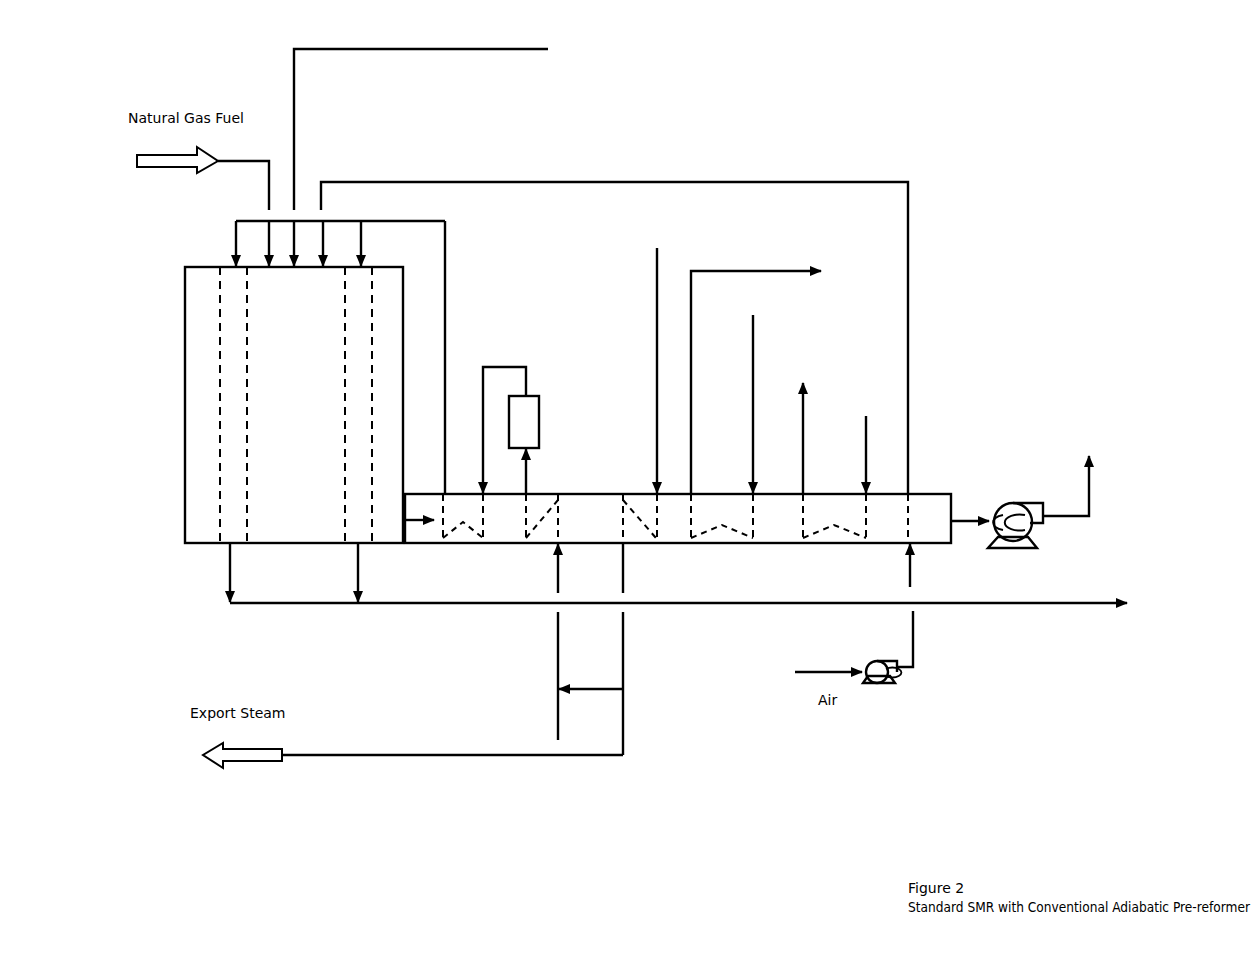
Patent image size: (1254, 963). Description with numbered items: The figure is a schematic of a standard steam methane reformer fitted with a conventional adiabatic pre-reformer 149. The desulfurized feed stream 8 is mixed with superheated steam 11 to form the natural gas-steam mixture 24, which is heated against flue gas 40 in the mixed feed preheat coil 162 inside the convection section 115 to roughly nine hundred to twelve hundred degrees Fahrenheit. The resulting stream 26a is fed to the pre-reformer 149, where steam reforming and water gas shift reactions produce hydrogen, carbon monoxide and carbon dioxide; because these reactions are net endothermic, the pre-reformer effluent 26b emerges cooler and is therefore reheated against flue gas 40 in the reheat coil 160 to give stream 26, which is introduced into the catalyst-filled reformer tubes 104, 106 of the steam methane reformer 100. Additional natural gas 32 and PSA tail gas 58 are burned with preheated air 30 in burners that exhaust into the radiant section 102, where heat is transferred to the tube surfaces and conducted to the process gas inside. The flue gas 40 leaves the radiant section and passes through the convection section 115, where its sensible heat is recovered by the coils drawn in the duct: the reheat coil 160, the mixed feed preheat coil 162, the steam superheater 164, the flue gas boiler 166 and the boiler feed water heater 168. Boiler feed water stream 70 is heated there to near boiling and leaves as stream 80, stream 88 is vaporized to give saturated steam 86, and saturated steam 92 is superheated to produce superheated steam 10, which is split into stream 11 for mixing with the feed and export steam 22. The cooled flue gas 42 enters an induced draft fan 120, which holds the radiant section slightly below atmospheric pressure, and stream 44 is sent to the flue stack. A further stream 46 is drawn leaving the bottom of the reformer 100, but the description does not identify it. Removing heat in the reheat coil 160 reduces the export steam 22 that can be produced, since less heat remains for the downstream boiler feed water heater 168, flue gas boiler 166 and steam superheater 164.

The PSA tail gas 58 is at (421, 113).
The additional natural gas 32 is at (203, 177).
The preheated air 30 is at (614, 326).
The reheated natural gas-steam stream 26 is at (457, 357).
The radiant section of the reformer 102 is at (294, 405).
The reformer tubes 104 is at (240, 449).
The reformer tubes 106 is at (342, 517).
The steam methane reformer 100 is at (294, 572).
The flue gas 40 is at (419, 510).
The pre-reformer effluent 26b is at (506, 416).
The conventional adiabatic pre-reformer 149 is at (524, 422).
The heated mixed feed stream 26a is at (543, 471).
The saturated steam 92 is at (646, 370).
The saturated steam from the convection section 86 is at (756, 369).
The boiler feed water stream to convection section 88 is at (764, 404).
The heated boiler feed water 80 is at (814, 438).
The boiler feed water stream 70 is at (854, 454).
The flue gas leaving the convection section 42 is at (970, 505).
The induced draft fan 120 is at (1015, 539).
The flue gas to stack 44 is at (1066, 486).
The reheat coil 160 is at (463, 543).
The mixed feed preheat coil 162 is at (537, 532).
The steam superheater 164 is at (644, 531).
The flue gas boiler 166 is at (722, 543).
The boiler feed water heater 168 is at (836, 543).
The convection section 115 is at (678, 535).
The product stream line 46 is at (678, 615).
The natural gas-steam mixture 24 is at (540, 616).
The superheated steam 10 is at (635, 649).
The superheated steam for feed 11 is at (591, 673).
The desulfurized feed stream 8 is at (541, 714).
The export steam 22 is at (413, 763).